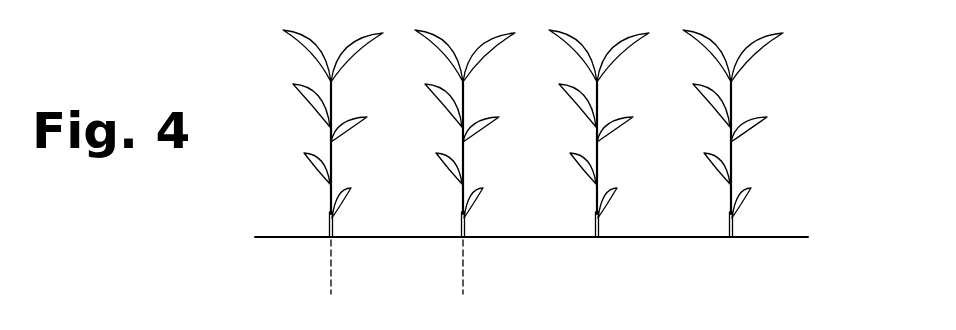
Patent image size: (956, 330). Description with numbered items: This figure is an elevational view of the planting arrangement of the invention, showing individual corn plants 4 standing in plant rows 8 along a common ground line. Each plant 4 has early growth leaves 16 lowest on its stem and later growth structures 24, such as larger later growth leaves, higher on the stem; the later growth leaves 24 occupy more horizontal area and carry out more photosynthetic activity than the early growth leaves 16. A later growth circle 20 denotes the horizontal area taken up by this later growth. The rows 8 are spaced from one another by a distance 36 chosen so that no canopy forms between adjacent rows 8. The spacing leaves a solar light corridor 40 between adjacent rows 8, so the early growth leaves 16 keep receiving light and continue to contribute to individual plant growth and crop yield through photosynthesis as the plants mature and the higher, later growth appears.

The individual corn plant 4 is at (490, 196).
The plant row 8 is at (327, 223).
The early growth leaf 16 is at (346, 197).
The later growth circle 20 is at (582, 104).
The later growth structure 24 is at (307, 50).
The row spacing distance 36 is at (334, 285).
The solar light corridor 40 is at (385, 173).